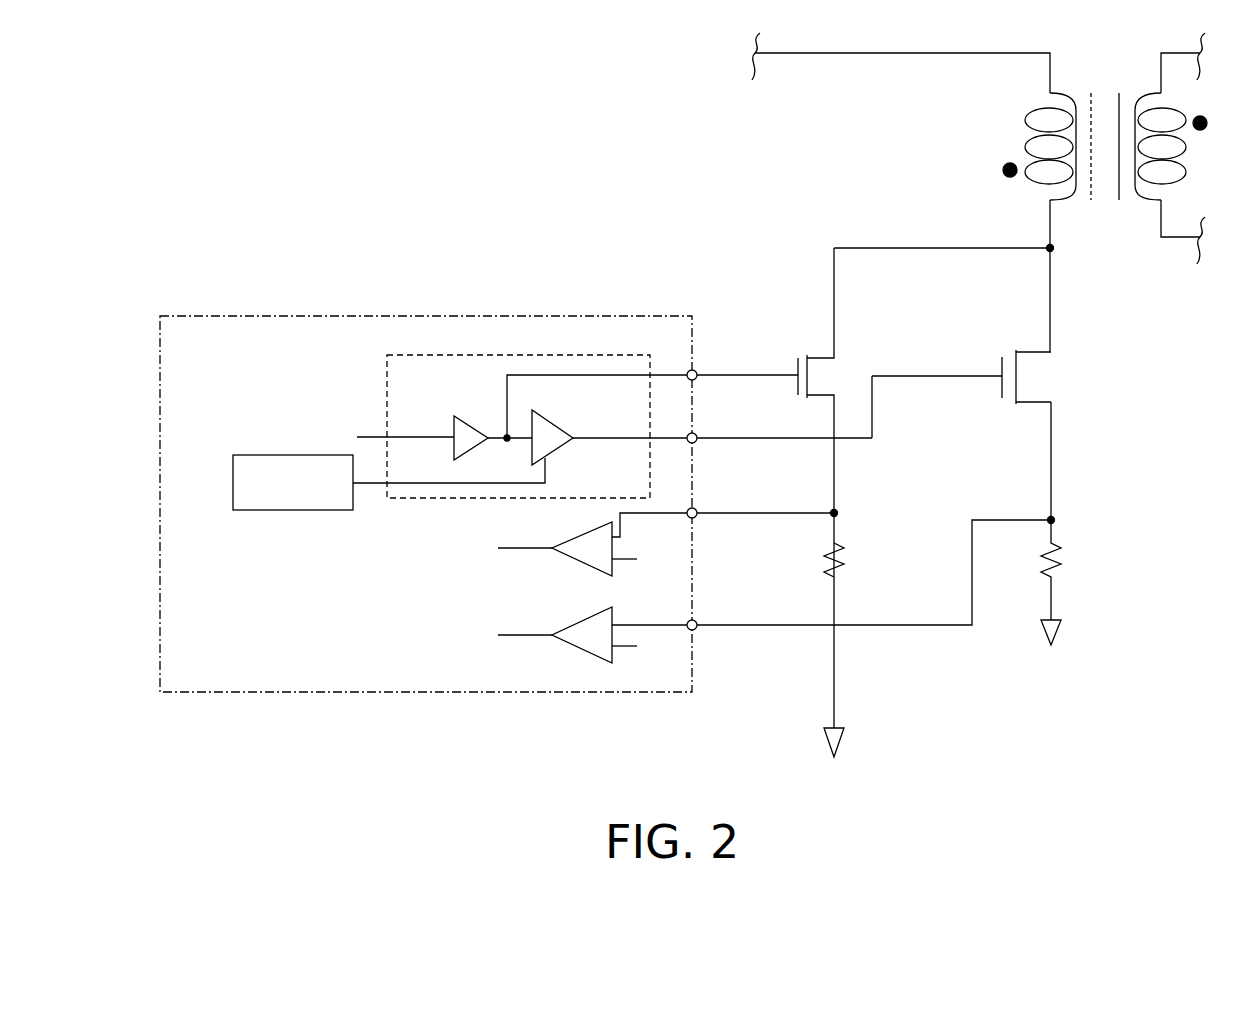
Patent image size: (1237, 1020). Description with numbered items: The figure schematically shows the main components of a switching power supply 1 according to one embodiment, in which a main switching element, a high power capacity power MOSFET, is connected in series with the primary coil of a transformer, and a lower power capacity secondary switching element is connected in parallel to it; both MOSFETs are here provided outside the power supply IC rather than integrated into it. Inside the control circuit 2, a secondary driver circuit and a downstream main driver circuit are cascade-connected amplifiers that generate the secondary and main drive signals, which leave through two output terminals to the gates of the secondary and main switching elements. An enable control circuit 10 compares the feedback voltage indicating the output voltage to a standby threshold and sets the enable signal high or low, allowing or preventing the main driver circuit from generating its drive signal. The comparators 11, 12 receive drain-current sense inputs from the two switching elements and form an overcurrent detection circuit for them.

The switching power supply device 1 is at (628, 125).
The control circuit 2 is at (459, 330).
The enable control circuit 10 is at (244, 455).
The comparator 11 is at (582, 561).
The comparator 12 is at (582, 649).